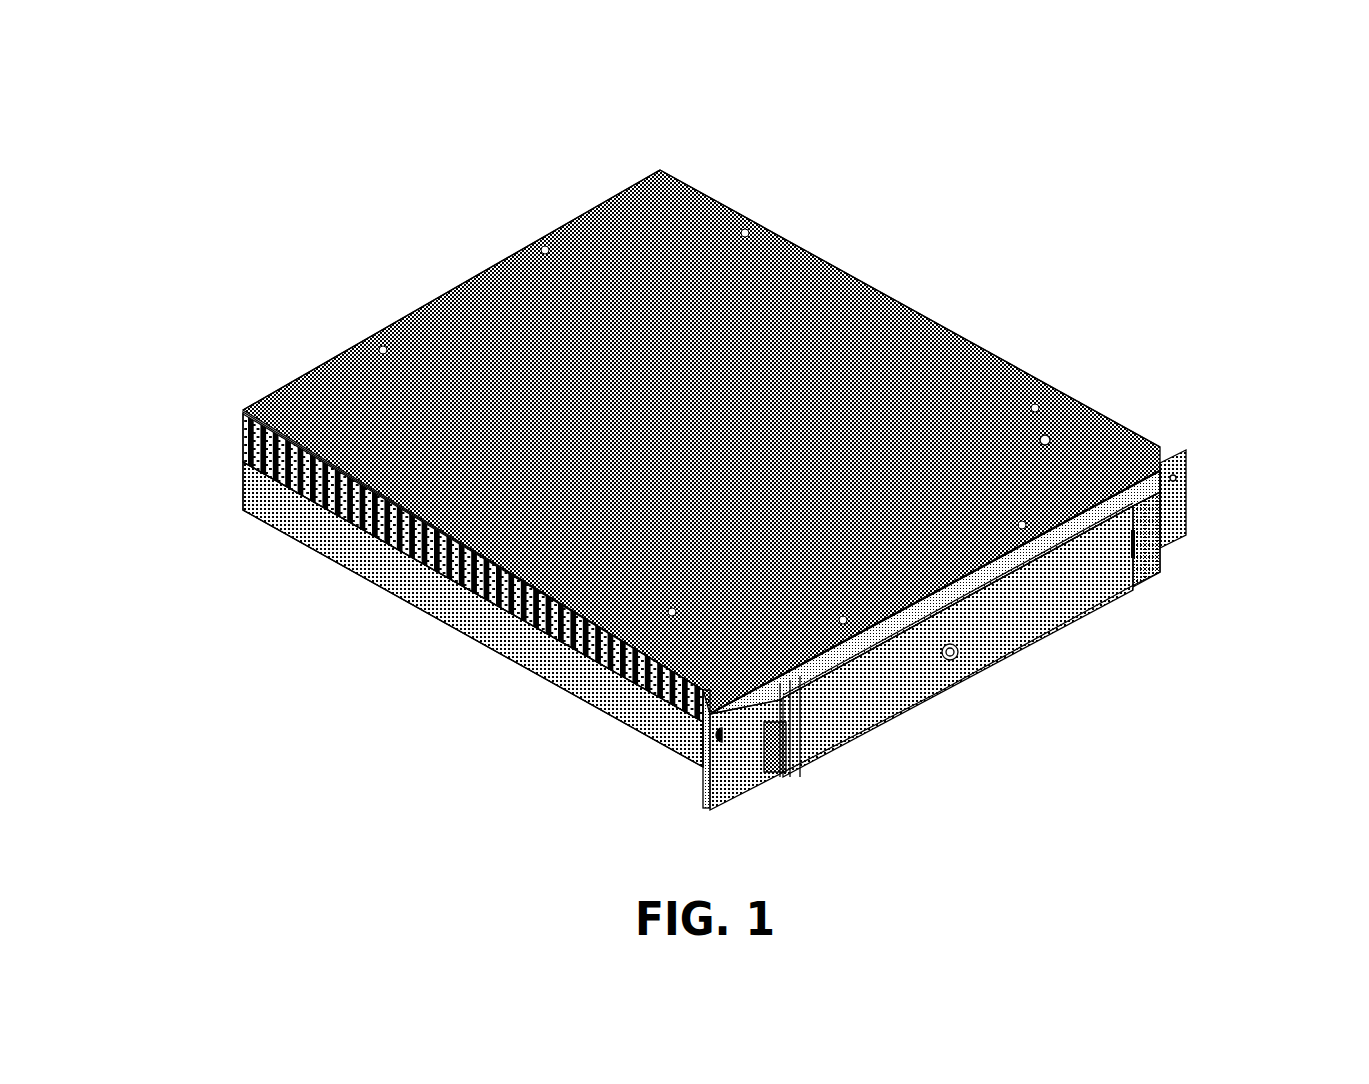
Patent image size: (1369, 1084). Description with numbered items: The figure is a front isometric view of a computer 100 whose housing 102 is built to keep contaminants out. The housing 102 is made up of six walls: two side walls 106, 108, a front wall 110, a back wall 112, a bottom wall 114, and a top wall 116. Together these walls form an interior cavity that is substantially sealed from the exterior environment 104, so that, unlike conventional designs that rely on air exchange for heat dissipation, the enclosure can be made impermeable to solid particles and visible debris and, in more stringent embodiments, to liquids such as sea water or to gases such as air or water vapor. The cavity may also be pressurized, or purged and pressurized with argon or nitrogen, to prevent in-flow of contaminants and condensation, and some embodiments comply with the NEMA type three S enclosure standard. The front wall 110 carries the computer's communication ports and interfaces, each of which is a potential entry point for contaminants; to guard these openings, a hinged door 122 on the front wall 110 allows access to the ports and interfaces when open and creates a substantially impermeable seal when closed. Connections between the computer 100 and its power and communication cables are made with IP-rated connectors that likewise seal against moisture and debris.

The computer 100 is at (698, 452).
The housing 102 is at (663, 171).
The exterior environment 104 is at (152, 150).
The side wall 106 is at (305, 519).
The side wall 108 is at (910, 304).
The front wall 110 is at (1180, 507).
The back wall 112 is at (451, 290).
The bottom wall 114 is at (579, 725).
The top wall 116 is at (1046, 440).
The hinged door 122 is at (1085, 587).